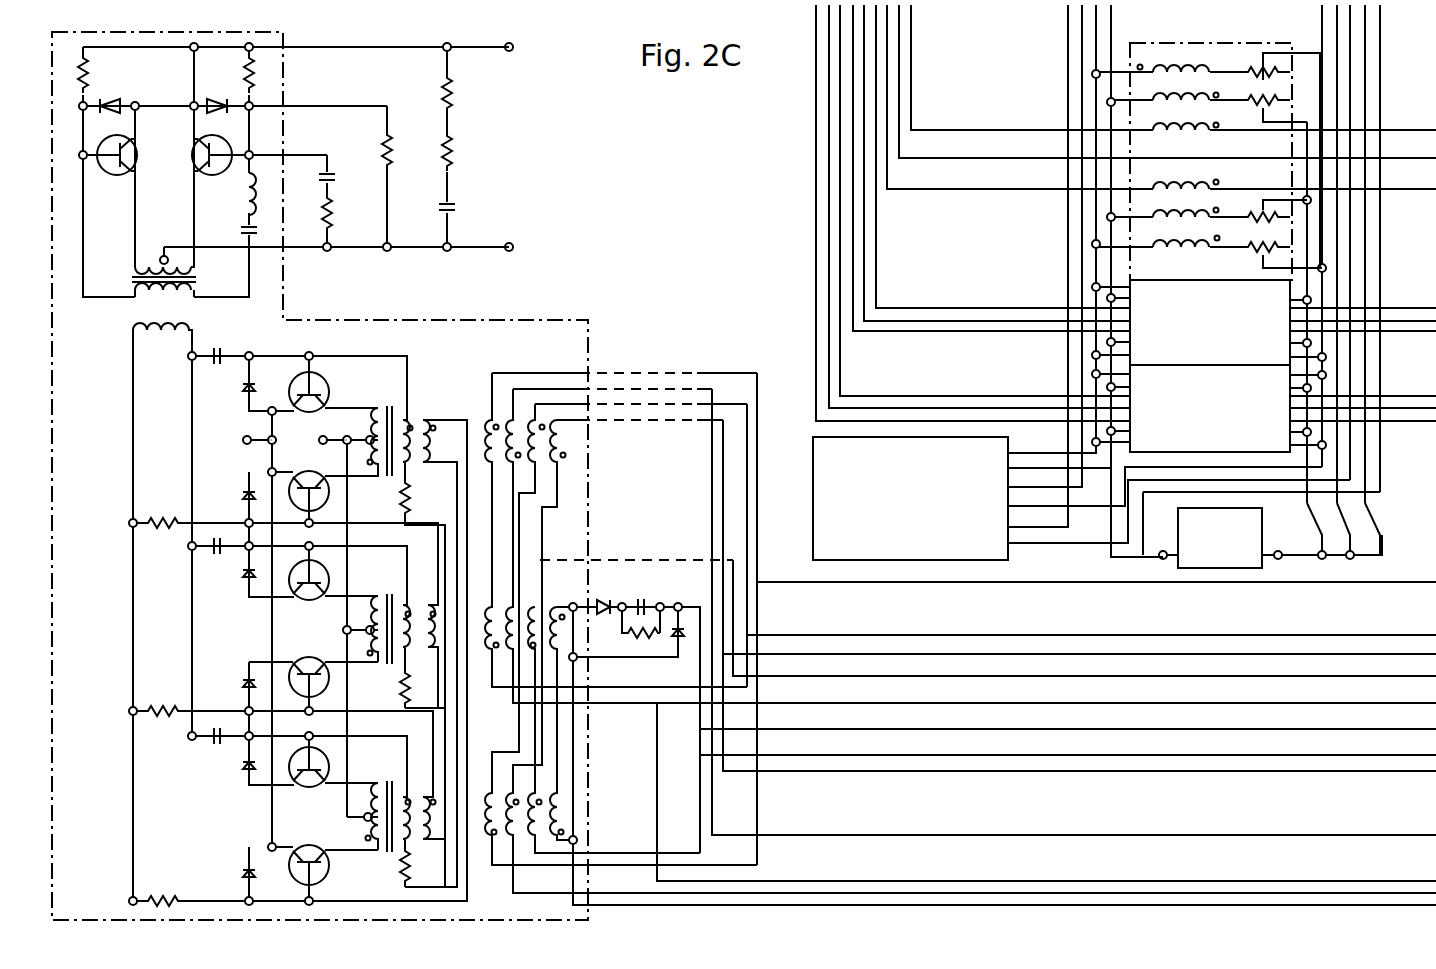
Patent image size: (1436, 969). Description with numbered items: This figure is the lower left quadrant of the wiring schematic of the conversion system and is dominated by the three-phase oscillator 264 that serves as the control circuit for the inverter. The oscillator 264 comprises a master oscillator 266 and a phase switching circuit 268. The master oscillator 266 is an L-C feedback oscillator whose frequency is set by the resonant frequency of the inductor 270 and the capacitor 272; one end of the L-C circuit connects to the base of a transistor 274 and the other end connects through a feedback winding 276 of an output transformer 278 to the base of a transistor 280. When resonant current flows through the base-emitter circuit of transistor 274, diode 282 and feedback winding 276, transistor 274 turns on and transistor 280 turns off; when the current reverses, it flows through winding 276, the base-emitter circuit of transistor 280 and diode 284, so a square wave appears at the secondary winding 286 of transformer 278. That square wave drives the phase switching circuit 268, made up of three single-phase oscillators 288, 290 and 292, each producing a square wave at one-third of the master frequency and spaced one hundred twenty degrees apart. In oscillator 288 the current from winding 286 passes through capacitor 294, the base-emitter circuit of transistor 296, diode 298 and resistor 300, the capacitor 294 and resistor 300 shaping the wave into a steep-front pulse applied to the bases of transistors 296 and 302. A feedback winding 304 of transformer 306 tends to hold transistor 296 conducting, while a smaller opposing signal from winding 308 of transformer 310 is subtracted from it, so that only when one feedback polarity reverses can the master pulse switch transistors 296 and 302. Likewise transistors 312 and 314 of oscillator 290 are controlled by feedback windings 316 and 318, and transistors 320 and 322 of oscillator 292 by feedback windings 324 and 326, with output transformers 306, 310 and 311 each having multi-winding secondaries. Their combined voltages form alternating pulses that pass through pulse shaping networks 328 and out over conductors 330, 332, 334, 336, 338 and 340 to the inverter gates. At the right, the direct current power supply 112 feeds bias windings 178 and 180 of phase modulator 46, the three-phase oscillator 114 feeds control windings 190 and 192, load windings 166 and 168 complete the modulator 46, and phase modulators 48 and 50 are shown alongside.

The phase modulator 46 is at (1322, 101).
The phase modulator 48 is at (1218, 336).
The phase modulator 50 is at (1218, 422).
The source of direct current power 112 is at (1262, 540).
The three-phase oscillator 114 is at (813, 497).
The load winding 166 is at (1155, 128).
The load winding 168 is at (1155, 185).
The bias winding 178 is at (1155, 98).
The bias winding 180 is at (1155, 215).
The control winding 190 is at (1155, 70).
The control winding 192 is at (1155, 245).
The three-phase oscillator 264 is at (400, 320).
The master oscillator 266 is at (183, 211).
The phase switching circuit 268 is at (113, 639).
The inductor 270 is at (249, 190).
The capacitor 272 is at (240, 234).
The transistor 274 is at (196, 160).
The feedback winding 276 is at (185, 296).
The output transformer 278 is at (118, 329).
The transistor 280 is at (133, 150).
The diode 282 is at (106, 99).
The diode 284 is at (220, 99).
The secondary winding 286 is at (168, 318).
The single-phase oscillator 288 is at (236, 422).
The single-phase oscillator 290 is at (260, 641).
The single-phase oscillator 292 is at (255, 831).
The capacitor 294 is at (220, 346).
The transistor 296 is at (322, 380).
The diode 298 is at (243, 495).
The resistor 300 is at (163, 518).
The transistor 302 is at (325, 494).
The feedback winding 304 is at (394, 412).
The transformer 306 is at (458, 482).
The winding 308 is at (410, 600).
The transformer 310 is at (448, 676).
The transformer 311 is at (446, 864).
The transistor 312 is at (322, 600).
The transistor 314 is at (292, 662).
The feedback winding 316 is at (400, 662).
The feedback winding 318 is at (410, 790).
The transistor 320 is at (322, 790).
The transistor 322 is at (293, 848).
The feedback winding 324 is at (396, 855).
The feedback winding 326 is at (412, 412).
The pulse shaping network 328 is at (680, 378).
The conductor 330 is at (1386, 583).
The conductor 332 is at (1386, 634).
The conductor 334 is at (1390, 676).
The conductor 336 is at (1390, 834).
The conductor 338 is at (1386, 773).
The conductor 340 is at (1390, 728).